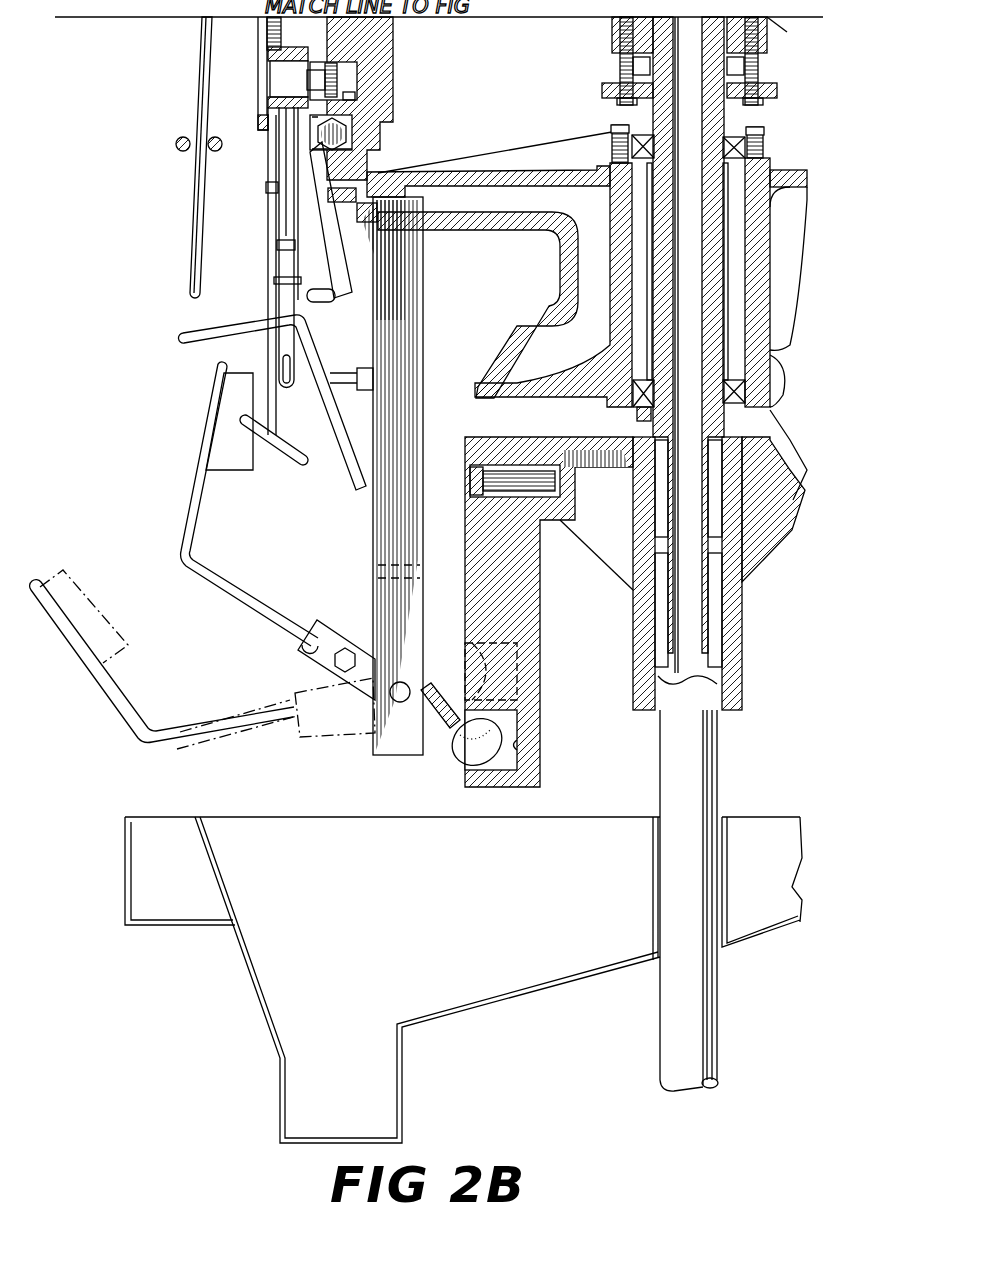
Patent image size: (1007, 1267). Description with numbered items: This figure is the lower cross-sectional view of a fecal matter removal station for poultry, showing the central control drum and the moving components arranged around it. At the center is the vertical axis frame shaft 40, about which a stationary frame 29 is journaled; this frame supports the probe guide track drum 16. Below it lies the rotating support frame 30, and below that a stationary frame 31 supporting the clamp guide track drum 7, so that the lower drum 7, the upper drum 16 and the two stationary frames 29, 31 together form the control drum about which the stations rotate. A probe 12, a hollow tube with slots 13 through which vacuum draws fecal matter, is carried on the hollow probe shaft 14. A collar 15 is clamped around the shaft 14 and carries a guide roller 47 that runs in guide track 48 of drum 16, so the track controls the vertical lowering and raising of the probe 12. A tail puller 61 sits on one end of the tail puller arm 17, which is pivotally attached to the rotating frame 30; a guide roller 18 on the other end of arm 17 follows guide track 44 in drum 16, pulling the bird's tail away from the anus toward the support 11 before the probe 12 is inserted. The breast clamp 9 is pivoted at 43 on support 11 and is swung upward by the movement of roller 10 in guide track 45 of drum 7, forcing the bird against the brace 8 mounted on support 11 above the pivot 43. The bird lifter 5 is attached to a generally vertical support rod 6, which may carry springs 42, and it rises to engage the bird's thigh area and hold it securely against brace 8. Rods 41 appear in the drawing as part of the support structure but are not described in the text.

The bird lifter 5 is at (293, 457).
The support rod 6 is at (277, 398).
The clamp guide track drum 7 is at (527, 590).
The brace 8 is at (203, 340).
The breast clamp 9 is at (192, 478).
The roller 10 is at (462, 758).
The support 11 is at (388, 518).
The probe 12 is at (286, 302).
The slots 13 is at (284, 370).
The hollow probe shaft 14 is at (288, 205).
The collar 15 is at (298, 89).
The probe guide track drum 16 is at (383, 33).
The tail puller arm 17 is at (333, 243).
The guide roller 18 is at (348, 130).
The stationary frame 29 is at (612, 17).
The rotating support frame 30 is at (560, 170).
The stationary frame 31 is at (597, 447).
The vertical axis frame shaft 40 is at (668, 795).
The guide rod 41 is at (212, 138).
The springs 42 is at (268, 40).
The pivot 43 is at (392, 718).
The guide track 44 is at (352, 147).
The guide track 45 is at (518, 748).
The guide roller 47 is at (333, 80).
The guide track 48 is at (352, 97).
The tail puller 61 is at (318, 303).